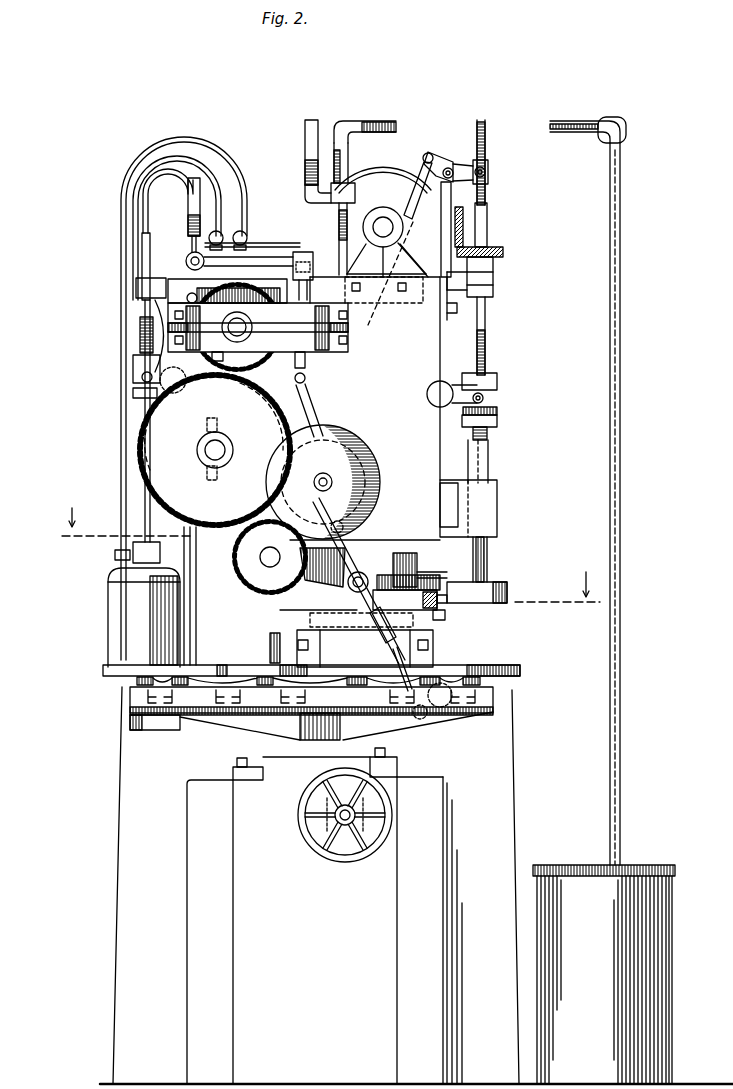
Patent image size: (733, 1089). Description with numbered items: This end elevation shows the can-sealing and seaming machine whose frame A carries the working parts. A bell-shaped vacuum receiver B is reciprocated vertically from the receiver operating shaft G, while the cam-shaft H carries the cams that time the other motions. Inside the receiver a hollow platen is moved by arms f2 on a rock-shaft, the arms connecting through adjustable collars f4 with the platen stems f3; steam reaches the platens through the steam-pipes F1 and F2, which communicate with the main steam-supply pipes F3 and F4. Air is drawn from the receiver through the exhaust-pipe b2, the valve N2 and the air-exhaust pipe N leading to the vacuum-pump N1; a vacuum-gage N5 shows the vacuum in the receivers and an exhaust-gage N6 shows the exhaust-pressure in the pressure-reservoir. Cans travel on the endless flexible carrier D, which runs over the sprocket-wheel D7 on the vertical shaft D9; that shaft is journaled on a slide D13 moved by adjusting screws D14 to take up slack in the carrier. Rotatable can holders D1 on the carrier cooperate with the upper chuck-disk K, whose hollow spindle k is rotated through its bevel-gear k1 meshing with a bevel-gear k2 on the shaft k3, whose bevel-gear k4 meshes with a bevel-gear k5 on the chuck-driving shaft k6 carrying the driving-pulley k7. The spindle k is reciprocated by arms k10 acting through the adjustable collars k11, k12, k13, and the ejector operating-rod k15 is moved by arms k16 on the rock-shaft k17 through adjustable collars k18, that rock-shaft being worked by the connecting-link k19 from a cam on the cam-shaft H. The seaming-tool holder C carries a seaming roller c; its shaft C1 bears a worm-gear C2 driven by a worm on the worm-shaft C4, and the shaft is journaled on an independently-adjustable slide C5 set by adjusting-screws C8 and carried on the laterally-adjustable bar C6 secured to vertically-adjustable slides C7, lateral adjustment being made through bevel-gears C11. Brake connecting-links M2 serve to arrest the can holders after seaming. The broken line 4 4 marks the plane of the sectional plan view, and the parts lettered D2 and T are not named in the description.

The frame A is at (416, 663).
The vacuum receiver B is at (144, 604).
The seaming-tool holder C is at (438, 606).
The seaming roller c is at (448, 601).
The tool-holder shaft C1 is at (418, 573).
The worm-gear C2 is at (450, 574).
The worm-shaft C4 is at (348, 586).
The independently-adjustable slide C5 is at (370, 560).
The laterally-adjustable bar C6 is at (305, 612).
The vertically-adjustable slide C7 is at (445, 660).
The adjusting-screw C8 is at (441, 620).
The bevel-gear C11 is at (270, 648).
The endless flexible carrier D is at (242, 718).
The rotatable can holder D1 is at (112, 677).
The table plate D2 is at (105, 666).
The sprocket-wheel D7 is at (130, 708).
The vertical shaft D9 is at (352, 738).
The slide D13 is at (295, 770).
The adjusting screw D14 is at (340, 861).
The steam-pipe F1 is at (120, 239).
The steam-pipe F2 is at (143, 155).
The main steam-supply pipe F3 is at (221, 232).
The main steam-supply pipe F4 is at (245, 234).
The exhaust-pipe b2 is at (137, 213).
The rock-shaft arm f2 is at (133, 368).
The platen stem f3 is at (140, 506).
The adjustable collar f4 is at (133, 393).
The receiver operating shaft G is at (230, 452).
The cam-shaft H is at (355, 470).
The upper chuck-disk K is at (508, 592).
The connecting-link M2 is at (254, 585).
The air-exhaust pipe N is at (186, 261).
The vacuum-pump N1 is at (604, 974).
The valve N2 is at (313, 266).
The vacuum-gage N5 is at (188, 201).
The exhaust-gage N6 is at (312, 118).
The gear T is at (250, 330).
The chuck spindle k is at (489, 561).
The bevel-gear k1 is at (500, 251).
The bevel-gear k2 is at (464, 227).
The shaft k3 is at (427, 283).
The bevel-gear k4 is at (387, 279).
The bevel-gear k5 is at (376, 212).
The chuck-driving shaft k6 is at (381, 232).
The driving-pulley k7 is at (399, 169).
The rock-shaft arm k10 is at (483, 396).
The adjustable collar k11 is at (497, 411).
The adjustable collar k12 is at (497, 378).
The adjustable collar k13 is at (497, 425).
The operating-rod k15 is at (487, 144).
The rock-shaft arm k16 is at (465, 166).
The rock-shaft k17 is at (449, 166).
The adjustable collar k18 is at (488, 174).
The connecting-link k19 is at (427, 152).
The section line 4 is at (326, 562).